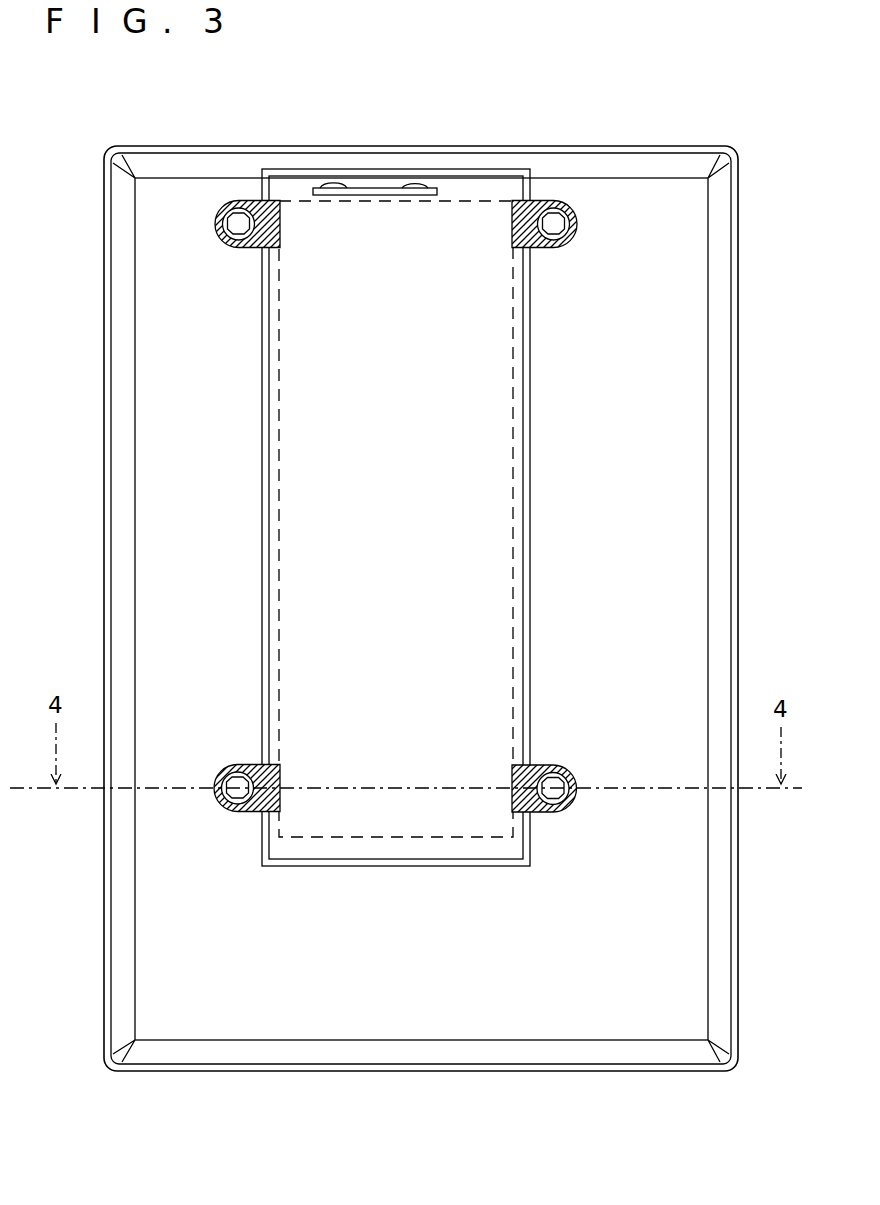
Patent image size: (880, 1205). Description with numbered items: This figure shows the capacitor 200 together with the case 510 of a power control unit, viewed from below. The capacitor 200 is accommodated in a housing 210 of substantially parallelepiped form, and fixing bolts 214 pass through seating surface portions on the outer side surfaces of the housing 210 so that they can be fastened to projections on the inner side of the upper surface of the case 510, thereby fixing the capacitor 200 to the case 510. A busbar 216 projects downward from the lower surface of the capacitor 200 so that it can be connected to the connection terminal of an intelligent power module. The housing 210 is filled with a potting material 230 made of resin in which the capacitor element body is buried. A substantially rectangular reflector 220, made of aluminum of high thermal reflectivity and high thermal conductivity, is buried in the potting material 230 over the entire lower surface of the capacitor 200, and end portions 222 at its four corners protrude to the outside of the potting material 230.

The case 510 is at (588, 148).
The capacitor 200 is at (543, 542).
The housing 210 is at (530, 590).
The fixing bolt 214 is at (569, 813).
The busbar 216 is at (372, 188).
The reflector 220 is at (423, 838).
The end portion 222 is at (568, 767).
The potting material 230 is at (312, 853).